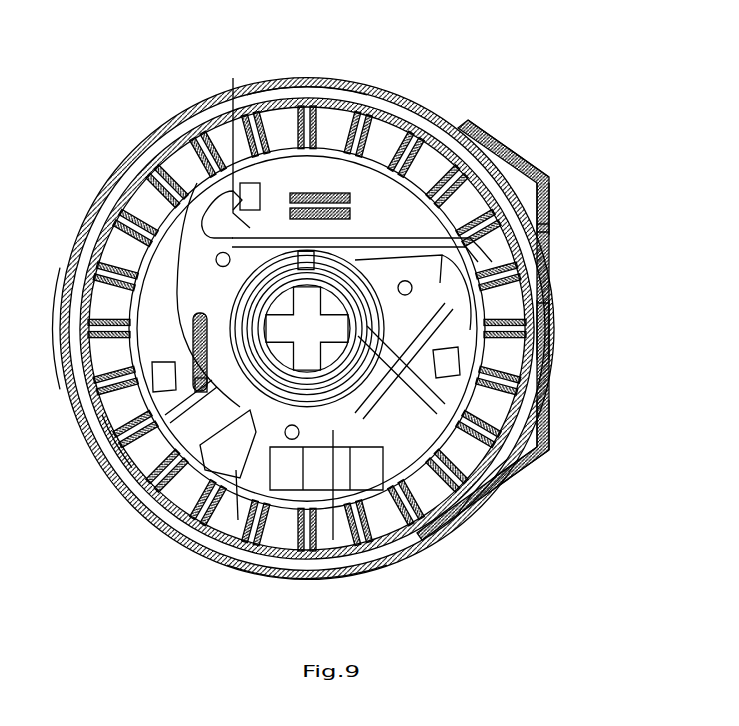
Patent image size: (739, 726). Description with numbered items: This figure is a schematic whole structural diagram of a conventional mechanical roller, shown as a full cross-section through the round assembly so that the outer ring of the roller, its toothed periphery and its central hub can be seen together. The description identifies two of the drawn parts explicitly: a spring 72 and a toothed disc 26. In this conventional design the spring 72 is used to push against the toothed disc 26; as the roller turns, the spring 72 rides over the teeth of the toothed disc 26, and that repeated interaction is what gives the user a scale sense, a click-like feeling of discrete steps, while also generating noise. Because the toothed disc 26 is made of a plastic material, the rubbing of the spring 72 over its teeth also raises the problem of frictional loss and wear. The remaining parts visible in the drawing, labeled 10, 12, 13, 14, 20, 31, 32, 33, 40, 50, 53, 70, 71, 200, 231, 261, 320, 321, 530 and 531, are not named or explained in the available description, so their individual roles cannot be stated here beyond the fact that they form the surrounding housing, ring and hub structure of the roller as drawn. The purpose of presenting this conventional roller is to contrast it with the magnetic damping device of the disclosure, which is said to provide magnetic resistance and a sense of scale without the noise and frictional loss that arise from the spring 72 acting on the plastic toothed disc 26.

The motor 10 is at (393, 90).
The frame ring 12 is at (268, 92).
The bottom housing portion 13 is at (377, 567).
The housing ring 14 is at (72, 235).
The stator 20 is at (170, 147).
The toothed disc 26 is at (473, 121).
The first side wall portion 31 is at (553, 207).
The second side wall portion 32 is at (553, 425).
The step portion 33 is at (553, 327).
The bracket block 40 is at (291, 450).
The bracket boss 50 is at (197, 250).
The bracket arm 53 is at (153, 343).
The coil assembly 70 is at (318, 240).
The fastening portion 71 is at (547, 227).
The spring 72 is at (362, 597).
The housing 200 is at (507, 142).
The housing arc portion 231 is at (483, 480).
The stator coil 261 is at (476, 224).
The housing edge 320 is at (550, 447).
The stator yoke portion 321 is at (113, 440).
The spring element 530 is at (195, 345).
The spring guide 531 is at (200, 380).